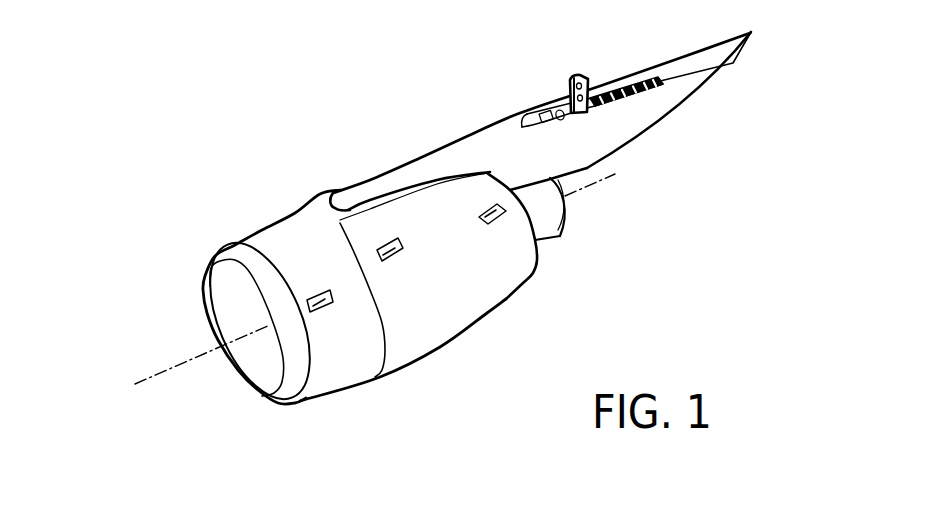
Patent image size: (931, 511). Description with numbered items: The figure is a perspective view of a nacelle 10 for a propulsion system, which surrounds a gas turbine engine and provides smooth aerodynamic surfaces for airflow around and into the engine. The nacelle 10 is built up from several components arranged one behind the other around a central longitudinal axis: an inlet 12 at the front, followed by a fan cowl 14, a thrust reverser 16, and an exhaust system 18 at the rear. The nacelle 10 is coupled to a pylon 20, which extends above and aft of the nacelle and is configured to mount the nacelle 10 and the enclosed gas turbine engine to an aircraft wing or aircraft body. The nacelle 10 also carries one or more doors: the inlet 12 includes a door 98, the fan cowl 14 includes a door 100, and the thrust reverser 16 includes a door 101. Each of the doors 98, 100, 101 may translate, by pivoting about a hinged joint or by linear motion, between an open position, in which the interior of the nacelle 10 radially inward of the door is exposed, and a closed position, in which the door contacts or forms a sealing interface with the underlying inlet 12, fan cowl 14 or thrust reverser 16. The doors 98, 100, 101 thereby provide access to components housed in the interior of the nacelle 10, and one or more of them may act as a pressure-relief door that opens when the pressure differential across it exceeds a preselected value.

The nacelle 10 is at (210, 175).
The inlet 12 is at (340, 373).
The fan cowl 14 is at (428, 327).
The thrust reverser 16 is at (518, 268).
The exhaust system 18 is at (548, 225).
The pylon 20 is at (627, 115).
The door 98 is at (330, 303).
The door 100 is at (398, 248).
The door 101 is at (483, 213).